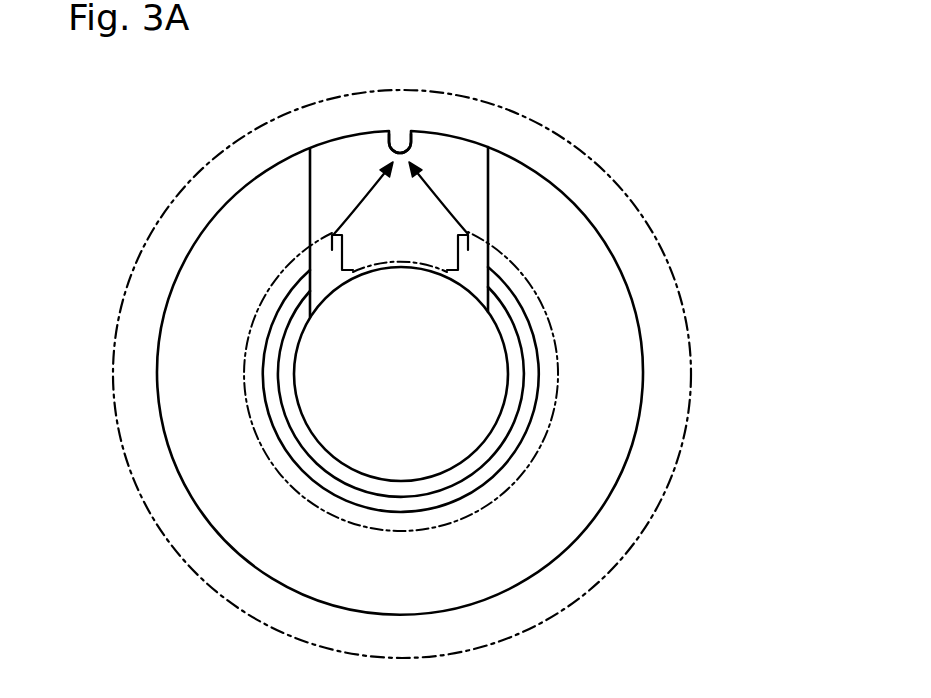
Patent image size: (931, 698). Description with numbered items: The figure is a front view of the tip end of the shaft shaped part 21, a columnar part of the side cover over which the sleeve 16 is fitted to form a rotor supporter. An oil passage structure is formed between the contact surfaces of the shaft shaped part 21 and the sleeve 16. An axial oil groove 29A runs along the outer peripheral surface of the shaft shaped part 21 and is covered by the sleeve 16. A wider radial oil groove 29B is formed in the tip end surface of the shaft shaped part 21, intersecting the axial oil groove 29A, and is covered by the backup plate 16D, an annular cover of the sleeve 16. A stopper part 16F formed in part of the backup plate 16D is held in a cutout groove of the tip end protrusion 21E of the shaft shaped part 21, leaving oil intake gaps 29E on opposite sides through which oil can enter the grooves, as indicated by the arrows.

The sleeve 16 is at (692, 379).
The backup plate 16D is at (272, 468).
The stopper part 16F is at (343, 255).
The shaft shaped part 21 is at (158, 384).
The tip end protrusion 21E is at (528, 362).
The axial oil groove 29A is at (398, 147).
The radial oil groove 29B is at (341, 185).
The clearance passage 29E is at (475, 265).